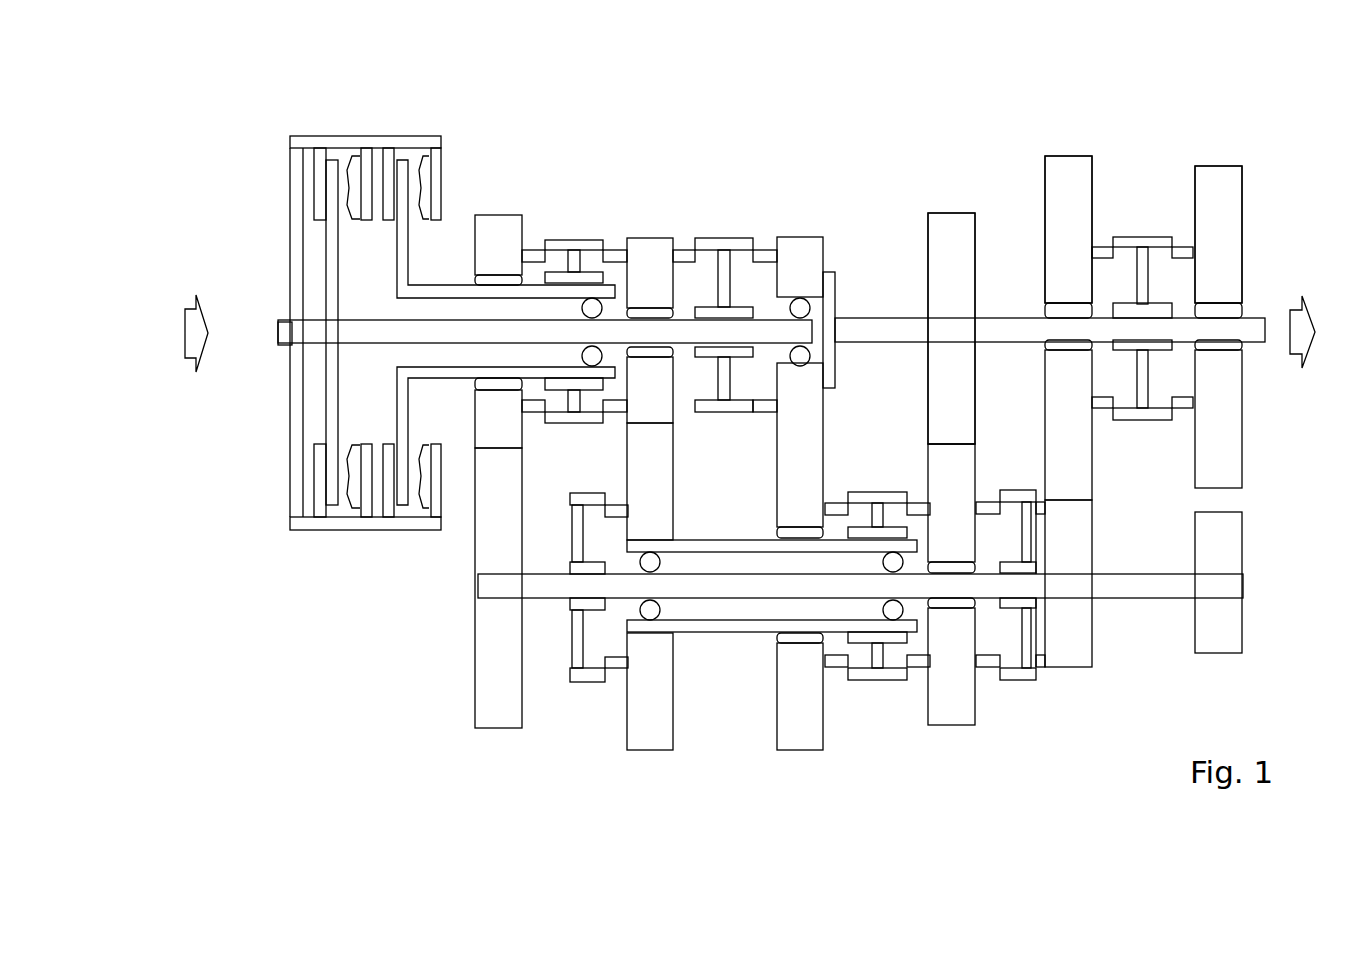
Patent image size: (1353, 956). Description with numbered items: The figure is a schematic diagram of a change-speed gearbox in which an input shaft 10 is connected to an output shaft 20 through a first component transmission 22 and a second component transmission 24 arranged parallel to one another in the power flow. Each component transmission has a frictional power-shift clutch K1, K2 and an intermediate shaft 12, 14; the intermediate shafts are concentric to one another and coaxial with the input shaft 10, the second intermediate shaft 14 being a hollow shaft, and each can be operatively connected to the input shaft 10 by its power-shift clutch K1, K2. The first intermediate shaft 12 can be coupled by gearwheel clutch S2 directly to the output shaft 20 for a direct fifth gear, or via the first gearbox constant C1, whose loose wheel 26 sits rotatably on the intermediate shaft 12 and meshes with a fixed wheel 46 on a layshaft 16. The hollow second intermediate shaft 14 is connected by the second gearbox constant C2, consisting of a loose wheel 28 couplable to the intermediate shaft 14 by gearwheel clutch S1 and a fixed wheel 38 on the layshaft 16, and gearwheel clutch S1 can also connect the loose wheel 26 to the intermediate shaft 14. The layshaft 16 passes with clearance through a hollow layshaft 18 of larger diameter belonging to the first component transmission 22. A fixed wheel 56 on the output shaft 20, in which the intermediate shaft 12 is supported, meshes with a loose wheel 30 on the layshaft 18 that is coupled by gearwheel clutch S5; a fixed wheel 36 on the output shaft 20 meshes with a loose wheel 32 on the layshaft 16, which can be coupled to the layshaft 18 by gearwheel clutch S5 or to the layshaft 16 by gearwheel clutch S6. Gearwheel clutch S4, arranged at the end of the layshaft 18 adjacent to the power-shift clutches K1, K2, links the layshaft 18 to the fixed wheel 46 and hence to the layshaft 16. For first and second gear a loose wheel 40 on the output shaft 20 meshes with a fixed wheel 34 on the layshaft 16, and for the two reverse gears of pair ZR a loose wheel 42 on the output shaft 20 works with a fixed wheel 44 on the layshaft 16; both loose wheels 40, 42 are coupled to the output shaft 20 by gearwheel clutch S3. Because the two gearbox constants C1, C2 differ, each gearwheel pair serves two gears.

The input shaft 10 is at (288, 335).
The first intermediate shaft 12 is at (338, 333).
The second intermediate shaft 14 is at (427, 285).
The layshaft 16 is at (558, 585).
The layshaft 18 is at (648, 633).
The output shaft 20 is at (1242, 325).
The first component transmission 22 is at (757, 807).
The second component transmission 24 is at (1083, 807).
The loose wheel 26 is at (650, 402).
The loose wheel 28 is at (512, 425).
The loose wheel 30 is at (805, 458).
The loose wheel 32 is at (953, 478).
The fixed wheel 34 is at (1082, 535).
The fixed wheel 36 is at (940, 270).
The fixed wheel 38 is at (502, 705).
The loose wheel 40 is at (1068, 250).
The loose wheel 42 is at (1215, 200).
The fixed wheel 44 is at (1220, 546).
The fixed wheel 46 is at (653, 703).
The fixed wheel 56 is at (800, 410).
The power-shift clutch K1 is at (337, 510).
The power-shift clutch K2 is at (407, 510).
The first gearbox constant C1 is at (648, 227).
The second gearbox constant C2 is at (498, 202).
The gearwheel clutch S1 is at (580, 240).
The gearwheel clutch S2 is at (732, 240).
The gearwheel clutch S3 is at (1148, 237).
The gearwheel clutch S4 is at (593, 680).
The gearwheel clutch S5 is at (872, 680).
The gearwheel clutch S6 is at (1010, 680).
The gearwheel pair ZR is at (1215, 152).